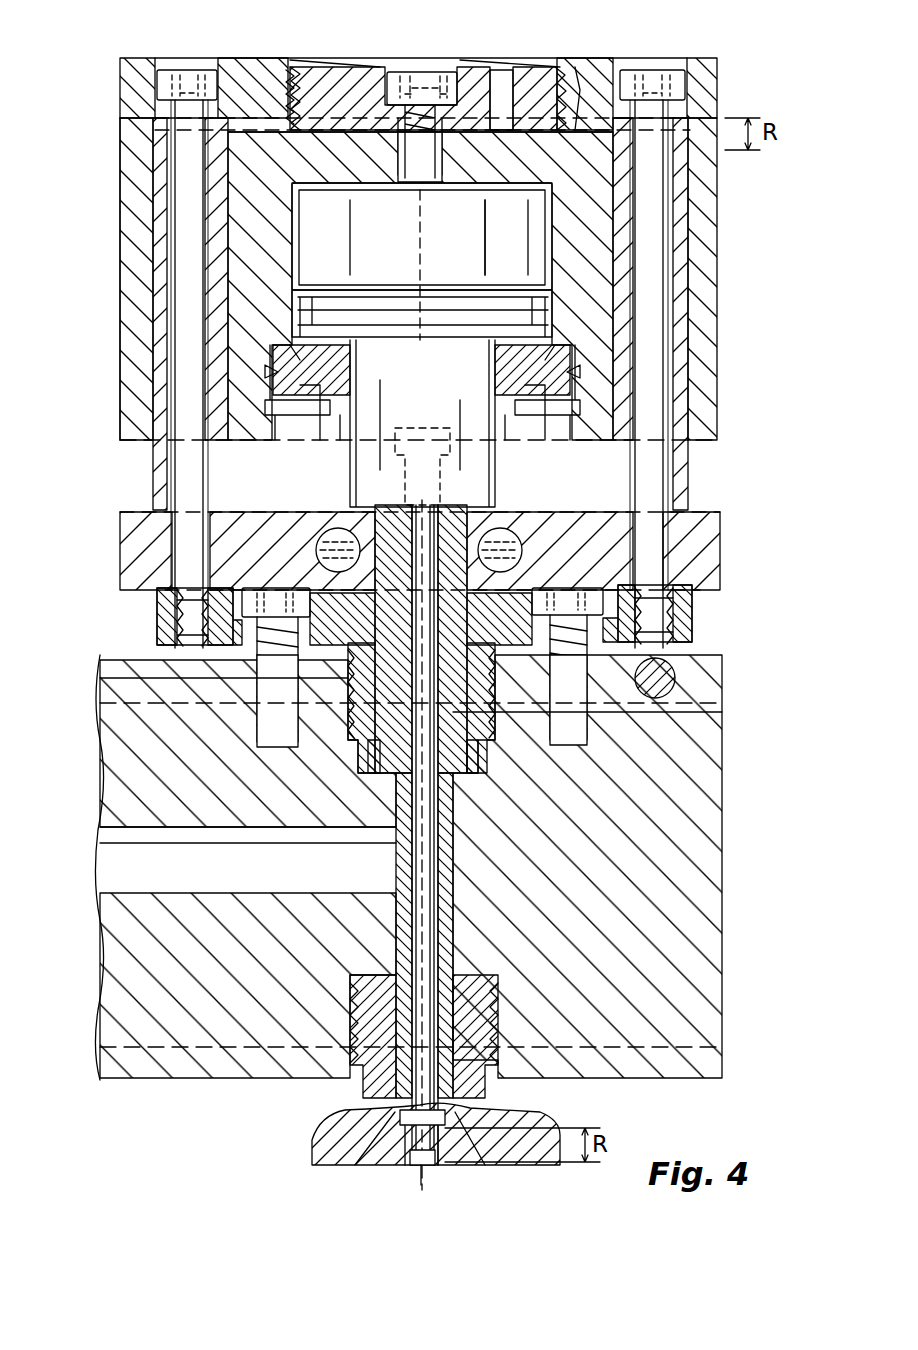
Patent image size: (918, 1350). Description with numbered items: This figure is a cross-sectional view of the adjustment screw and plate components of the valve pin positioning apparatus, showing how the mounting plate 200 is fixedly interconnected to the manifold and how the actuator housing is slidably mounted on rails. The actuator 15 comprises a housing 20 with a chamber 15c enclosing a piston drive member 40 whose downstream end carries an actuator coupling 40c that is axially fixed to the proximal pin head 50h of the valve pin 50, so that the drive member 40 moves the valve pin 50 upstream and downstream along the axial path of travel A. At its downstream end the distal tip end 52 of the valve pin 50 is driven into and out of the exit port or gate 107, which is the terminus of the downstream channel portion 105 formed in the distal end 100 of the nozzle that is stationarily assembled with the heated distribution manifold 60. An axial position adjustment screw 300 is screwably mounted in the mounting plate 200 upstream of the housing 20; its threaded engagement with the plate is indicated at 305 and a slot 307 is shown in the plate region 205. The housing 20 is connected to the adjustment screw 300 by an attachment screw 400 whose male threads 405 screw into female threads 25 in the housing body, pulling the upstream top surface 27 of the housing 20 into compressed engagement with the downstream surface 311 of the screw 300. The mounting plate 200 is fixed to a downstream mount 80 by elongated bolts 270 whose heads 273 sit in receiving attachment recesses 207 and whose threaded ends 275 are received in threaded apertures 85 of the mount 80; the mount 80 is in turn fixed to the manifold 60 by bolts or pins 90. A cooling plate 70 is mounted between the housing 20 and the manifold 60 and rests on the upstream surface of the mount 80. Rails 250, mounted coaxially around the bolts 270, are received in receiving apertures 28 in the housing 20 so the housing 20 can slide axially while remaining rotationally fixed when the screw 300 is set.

The actuator 15 is at (112, 152).
The chamber 15c is at (515, 245).
The housing 20 is at (125, 245).
The female threads 25 is at (425, 170).
The upstream top surface 27 is at (292, 75).
The receiving apertures 28 is at (153, 445).
The piston drive member 40 is at (400, 290).
The actuator coupling 40c is at (352, 465).
The valve pin 50 is at (495, 530).
The pin head 50h is at (466, 447).
The distal tip end 52 is at (428, 1165).
The heated distribution manifold 60 is at (720, 700).
The cooling plate 70 is at (125, 522).
The downstream mount 80 is at (700, 608).
The threaded apertures 85 is at (172, 605).
The bolts or pins 90 is at (110, 680).
The nozzle distal end 100 is at (475, 1110).
The downstream channel portion 105 is at (360, 1010).
The exit port or gate 107 is at (418, 1165).
The mounting plate 200 is at (272, 58).
The top plate portion 205 is at (560, 62).
The receiving attachment recesses 207 is at (153, 60).
The rails 250 is at (153, 470).
The bolts 270 is at (180, 282).
The bolt head 273 is at (185, 70).
The threaded end 275 is at (176, 625).
The axial position adjustment screw 300 is at (325, 67).
The thread joint 305 is at (580, 75).
The slot 307 is at (500, 68).
The downstream surface 311 is at (300, 130).
The attachment screw 400 is at (430, 72).
The male threads 405 is at (400, 160).
The axial path of travel A is at (425, 256).